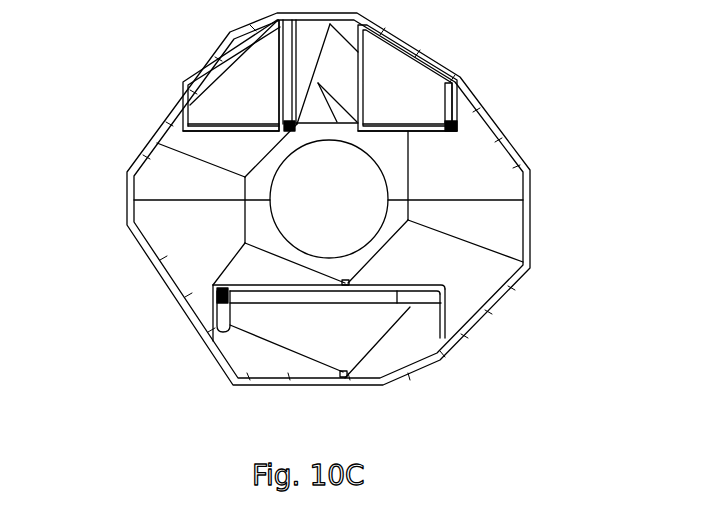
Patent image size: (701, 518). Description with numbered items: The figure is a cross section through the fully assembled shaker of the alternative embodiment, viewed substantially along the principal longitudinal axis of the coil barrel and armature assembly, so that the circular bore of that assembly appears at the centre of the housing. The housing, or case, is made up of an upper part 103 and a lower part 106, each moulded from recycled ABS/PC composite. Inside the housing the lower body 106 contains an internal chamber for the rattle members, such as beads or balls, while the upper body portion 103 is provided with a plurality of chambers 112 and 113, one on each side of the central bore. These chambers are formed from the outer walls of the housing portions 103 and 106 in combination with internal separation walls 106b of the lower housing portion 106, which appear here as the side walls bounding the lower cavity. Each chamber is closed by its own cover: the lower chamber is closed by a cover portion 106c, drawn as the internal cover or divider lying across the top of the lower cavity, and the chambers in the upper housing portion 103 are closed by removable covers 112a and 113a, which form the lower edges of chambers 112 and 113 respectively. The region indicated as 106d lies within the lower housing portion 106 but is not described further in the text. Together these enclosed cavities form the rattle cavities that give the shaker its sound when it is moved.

The upper part 103 is at (152, 136).
The lower part 106 is at (163, 272).
The internal separation walls 106b is at (445, 322).
The cover portion 106c is at (255, 288).
The lower channel 106d is at (402, 360).
The chamber 112 is at (247, 72).
The removable cover 112a is at (220, 127).
The chamber 113 is at (385, 68).
The removable cover 113a is at (425, 136).